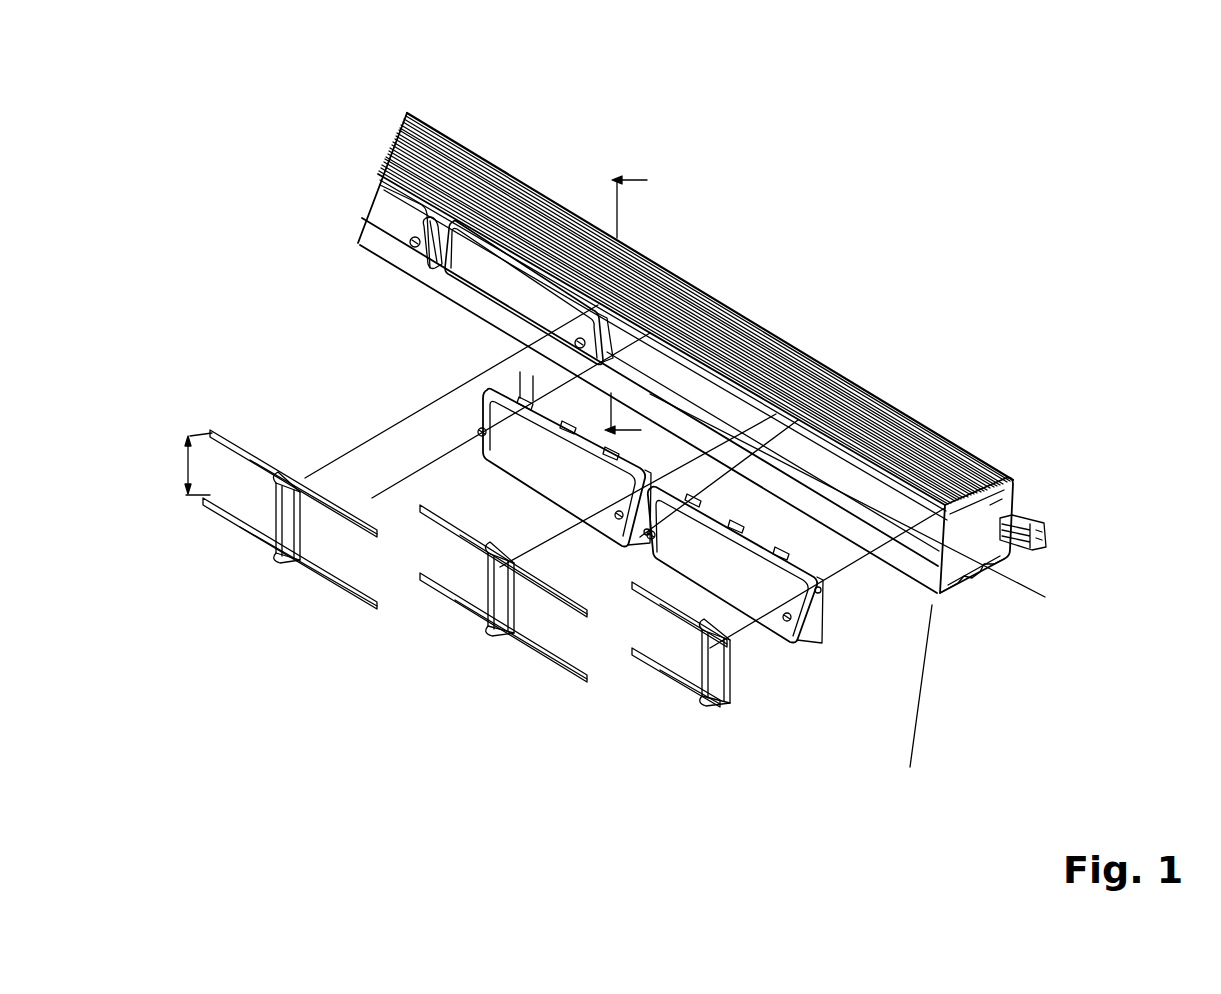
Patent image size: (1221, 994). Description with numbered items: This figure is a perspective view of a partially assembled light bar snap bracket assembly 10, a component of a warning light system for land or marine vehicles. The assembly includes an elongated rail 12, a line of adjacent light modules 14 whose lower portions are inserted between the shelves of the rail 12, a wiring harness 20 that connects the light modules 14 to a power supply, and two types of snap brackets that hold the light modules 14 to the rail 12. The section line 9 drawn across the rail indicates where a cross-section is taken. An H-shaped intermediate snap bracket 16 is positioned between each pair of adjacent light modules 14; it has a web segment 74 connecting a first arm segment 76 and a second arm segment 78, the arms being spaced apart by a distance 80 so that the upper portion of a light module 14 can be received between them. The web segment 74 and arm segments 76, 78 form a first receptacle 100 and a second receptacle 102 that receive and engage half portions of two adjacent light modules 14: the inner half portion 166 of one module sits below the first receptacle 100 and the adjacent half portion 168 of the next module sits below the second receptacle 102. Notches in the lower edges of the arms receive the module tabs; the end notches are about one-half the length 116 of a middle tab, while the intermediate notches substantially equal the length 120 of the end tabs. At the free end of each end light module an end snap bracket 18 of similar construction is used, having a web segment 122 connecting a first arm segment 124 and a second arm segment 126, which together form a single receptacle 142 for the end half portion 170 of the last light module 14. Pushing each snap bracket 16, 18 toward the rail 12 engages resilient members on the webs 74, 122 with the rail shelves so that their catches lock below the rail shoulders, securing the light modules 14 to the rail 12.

The light bar snap bracket assembly 10 is at (1016, 138).
The elongated rail 12 is at (893, 403).
The light module 14 is at (380, 227).
The intermediate snap bracket 16 is at (430, 280).
The end snap bracket 18 is at (672, 678).
The wiring harness 20 is at (1048, 518).
The section line 9 is at (637, 312).
The web segment 74 is at (295, 530).
The first arm segment 76 is at (377, 527).
The second arm segment 78 is at (378, 607).
The distance between arm segments 80 is at (186, 464).
The first receptacle 100 is at (243, 493).
The second receptacle 102 is at (543, 620).
The length of middle tab 116 is at (770, 535).
The length of end tabs 120 is at (517, 387).
The web segment 122 is at (727, 663).
The first arm segment 124 is at (636, 584).
The second arm segment 126 is at (622, 652).
The single receptacle 142 is at (673, 643).
The inner half portion 166 is at (387, 257).
The adjacent half portion 168 is at (452, 277).
The end half portion 170 is at (820, 597).